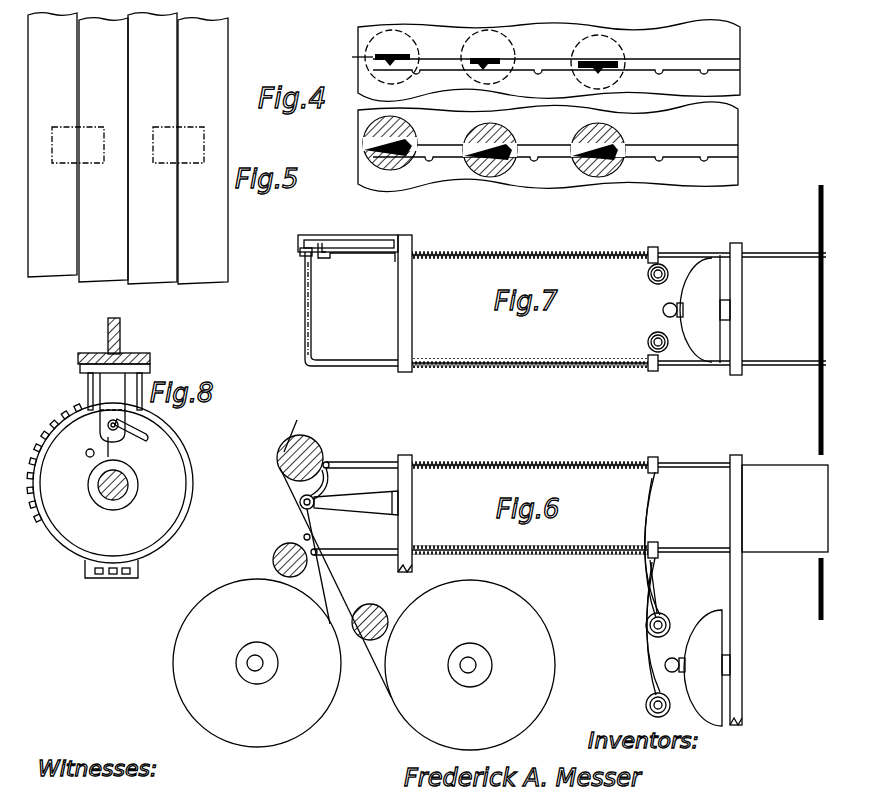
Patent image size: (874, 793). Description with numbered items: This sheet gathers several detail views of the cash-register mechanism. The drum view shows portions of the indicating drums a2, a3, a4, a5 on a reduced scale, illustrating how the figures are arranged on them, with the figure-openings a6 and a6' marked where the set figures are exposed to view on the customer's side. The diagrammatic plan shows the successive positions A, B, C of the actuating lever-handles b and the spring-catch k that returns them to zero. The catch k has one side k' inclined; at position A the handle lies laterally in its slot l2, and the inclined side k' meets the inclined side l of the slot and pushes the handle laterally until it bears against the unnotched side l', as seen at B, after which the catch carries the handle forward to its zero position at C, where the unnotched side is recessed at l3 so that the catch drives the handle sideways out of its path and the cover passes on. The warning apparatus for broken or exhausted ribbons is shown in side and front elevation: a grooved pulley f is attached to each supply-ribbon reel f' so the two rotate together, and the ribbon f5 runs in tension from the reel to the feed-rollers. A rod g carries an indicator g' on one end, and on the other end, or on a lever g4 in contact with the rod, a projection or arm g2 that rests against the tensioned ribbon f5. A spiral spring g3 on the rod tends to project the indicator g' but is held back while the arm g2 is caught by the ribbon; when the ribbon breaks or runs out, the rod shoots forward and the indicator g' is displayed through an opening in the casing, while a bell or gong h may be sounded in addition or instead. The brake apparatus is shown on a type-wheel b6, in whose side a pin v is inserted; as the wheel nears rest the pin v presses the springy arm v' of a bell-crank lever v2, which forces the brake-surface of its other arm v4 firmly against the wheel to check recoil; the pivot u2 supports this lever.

In FIG. 5, the indicating drum a2 is at (49, 268).
In FIG. 4, the indicating drum a2 is at (562, 147).
In FIG. 5, the indicating drum a3 is at (110, 272).
In FIG. 4, the indicating drum a3 is at (562, 61).
In FIG. 5, the indicating drum a4 is at (152, 154).
In FIG. 5, the indicating drum a5 is at (211, 272).
In FIG. 5, the figure-opening a6 is at (204, 145).
In FIG. 5, the figure-opening a6' is at (69, 156).
In FIG. 4, the lever-handle position A is at (598, 47).
In FIG. 4, the lever-handle position B is at (488, 43).
In FIG. 4, the lever-handle position C is at (392, 43).
In FIG. 4, the actuating lever-handle b is at (395, 55).
In FIG. 4, the inclined side of slot l is at (574, 134).
In FIG. 4, the unnotched side of slot l' is at (566, 91).
In FIG. 4, the slot l2 is at (724, 62).
In FIG. 4, the recess l3 is at (353, 57).
In FIG. 4, the spring-catch k is at (494, 165).
In FIG. 4, the inclined side of catch k' is at (635, 132).
In FIG. 7, the rod g is at (694, 311).
In FIG. 6, the rod g is at (694, 508).
In FIG. 7, the warning-indicator g' is at (784, 321).
In FIG. 6, the warning-indicator g' is at (785, 508).
In FIG. 7, the projection or arm g2 is at (316, 305).
In FIG. 6, the projection or arm g2 is at (304, 520).
In FIG. 7, the spring g3 is at (446, 254).
In FIG. 6, the spring g3 is at (446, 464).
In FIG. 7, the lever g4 is at (300, 243).
In FIG. 6, the lever g4 is at (330, 476).
In FIG. 7, the bell or gong h is at (695, 309).
In FIG. 6, the bell or gong h is at (693, 590).
In FIG. 6, the grooved pulley f is at (470, 665).
In FIG. 6, the supply-ribbon reel f' is at (257, 663).
In FIG. 6, the ribbon f5 is at (320, 582).
In FIG. 8, the type-wheel b6 is at (110, 490).
In FIG. 8, the pin v is at (80, 459).
In FIG. 8, the arm of bell-crank lever v' is at (116, 448).
In FIG. 8, the bell-crank lever v2 is at (114, 380).
In FIG. 8, the brake arm v4 is at (150, 440).
In FIG. 8, the pivot u2 is at (107, 428).